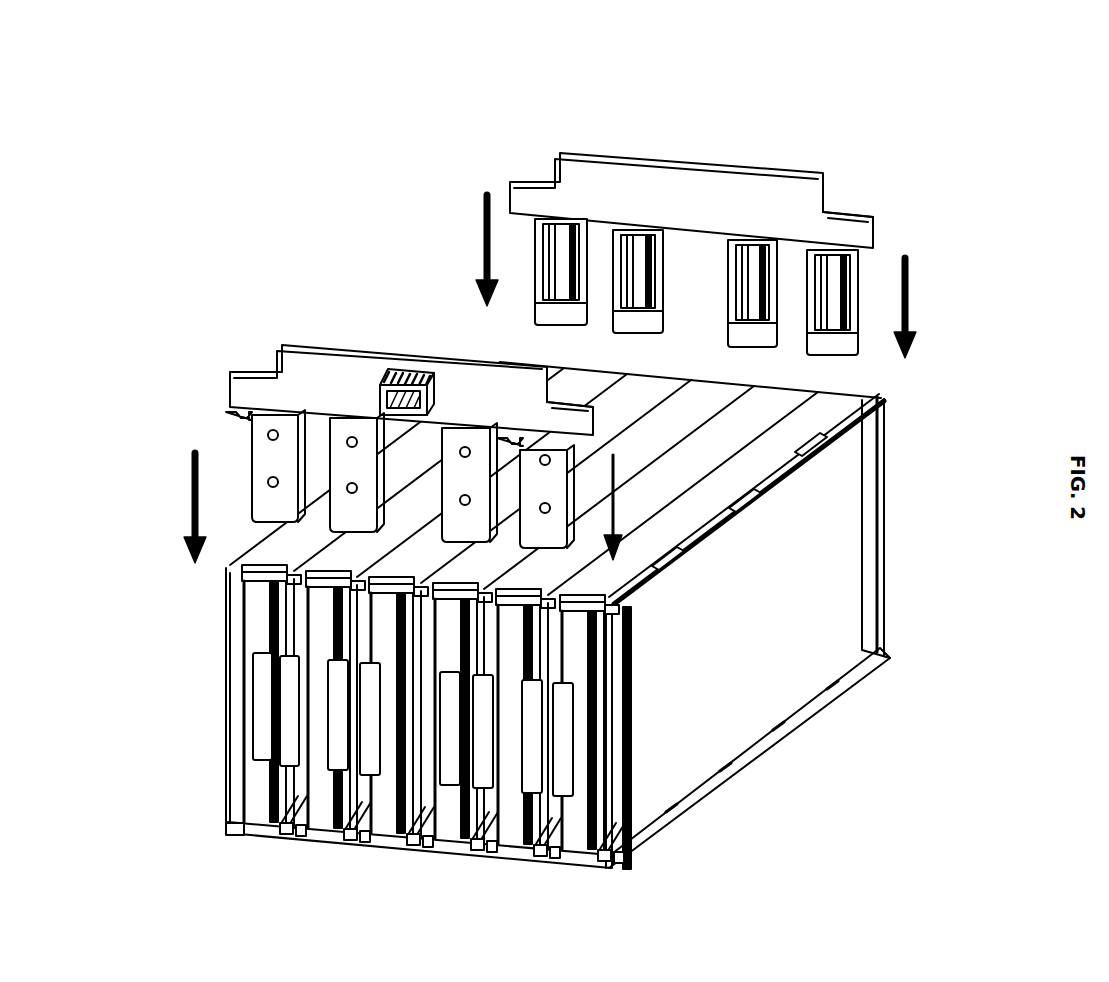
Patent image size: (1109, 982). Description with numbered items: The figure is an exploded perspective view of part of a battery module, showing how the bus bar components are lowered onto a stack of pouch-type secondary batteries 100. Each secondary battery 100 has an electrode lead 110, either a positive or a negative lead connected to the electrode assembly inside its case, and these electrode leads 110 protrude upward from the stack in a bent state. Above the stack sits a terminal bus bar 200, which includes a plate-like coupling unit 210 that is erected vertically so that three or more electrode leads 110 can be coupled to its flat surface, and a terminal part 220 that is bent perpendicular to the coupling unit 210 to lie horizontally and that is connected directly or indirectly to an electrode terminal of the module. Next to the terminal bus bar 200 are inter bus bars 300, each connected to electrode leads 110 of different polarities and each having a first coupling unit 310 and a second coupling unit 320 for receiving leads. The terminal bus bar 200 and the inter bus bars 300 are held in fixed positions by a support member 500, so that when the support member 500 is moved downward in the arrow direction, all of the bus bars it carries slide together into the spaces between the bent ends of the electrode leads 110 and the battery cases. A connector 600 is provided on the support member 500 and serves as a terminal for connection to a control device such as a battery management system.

The secondary battery 100 is at (848, 578).
The electrode lead 110 is at (275, 748).
The terminal bus bar 200 is at (548, 475).
The coupling unit 210 is at (270, 459).
The terminal part 220 is at (248, 417).
The inter bus bar 300 is at (682, 305).
The first coupling unit 310 is at (640, 327).
The second coupling unit 320 is at (567, 320).
The support member 500 is at (718, 197).
The connector 600 is at (408, 370).